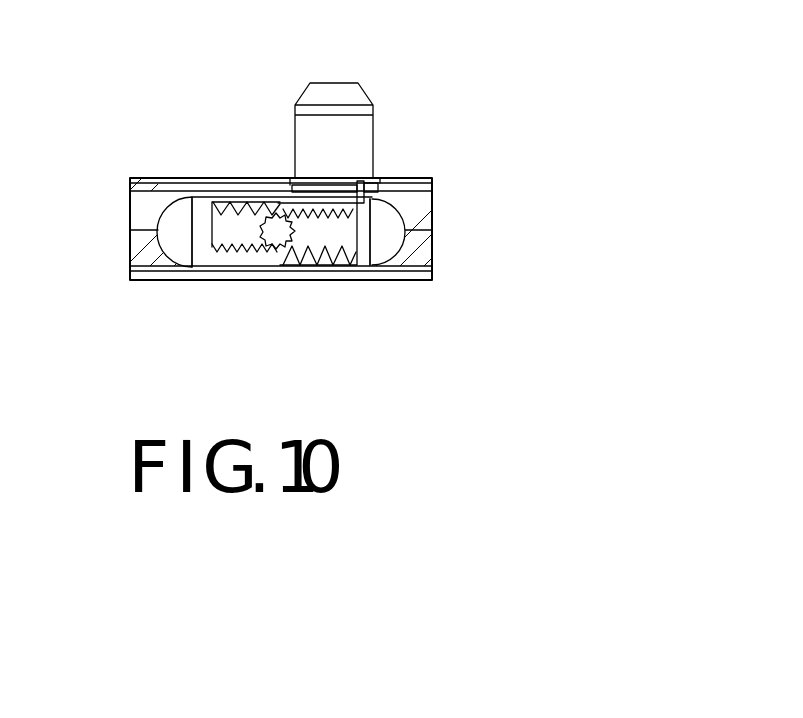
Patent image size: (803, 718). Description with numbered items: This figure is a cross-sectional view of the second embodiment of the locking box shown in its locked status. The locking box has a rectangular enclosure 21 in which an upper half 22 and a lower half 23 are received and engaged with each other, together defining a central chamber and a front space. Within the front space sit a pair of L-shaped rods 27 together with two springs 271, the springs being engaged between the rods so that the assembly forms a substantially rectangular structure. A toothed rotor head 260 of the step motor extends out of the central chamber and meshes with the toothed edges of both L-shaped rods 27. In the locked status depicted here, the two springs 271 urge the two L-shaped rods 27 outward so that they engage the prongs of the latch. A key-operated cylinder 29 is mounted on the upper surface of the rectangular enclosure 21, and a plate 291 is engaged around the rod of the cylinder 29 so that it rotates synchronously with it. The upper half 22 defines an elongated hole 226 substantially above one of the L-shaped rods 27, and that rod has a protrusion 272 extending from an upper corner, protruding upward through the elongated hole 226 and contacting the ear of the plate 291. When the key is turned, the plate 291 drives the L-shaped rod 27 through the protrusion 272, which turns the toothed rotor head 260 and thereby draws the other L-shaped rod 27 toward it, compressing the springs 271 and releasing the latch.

The cylinder 29 is at (356, 92).
The rectangular enclosure 21 is at (181, 178).
The elongated hole 226 is at (300, 193).
The protrusion 272 is at (365, 184).
The plate 291 is at (372, 182).
The upper half 22 is at (132, 205).
The L-shaped rod 27 is at (372, 232).
The lower half 23 is at (135, 250).
The spring 271 is at (224, 212).
The toothed rotor head 260 is at (278, 252).